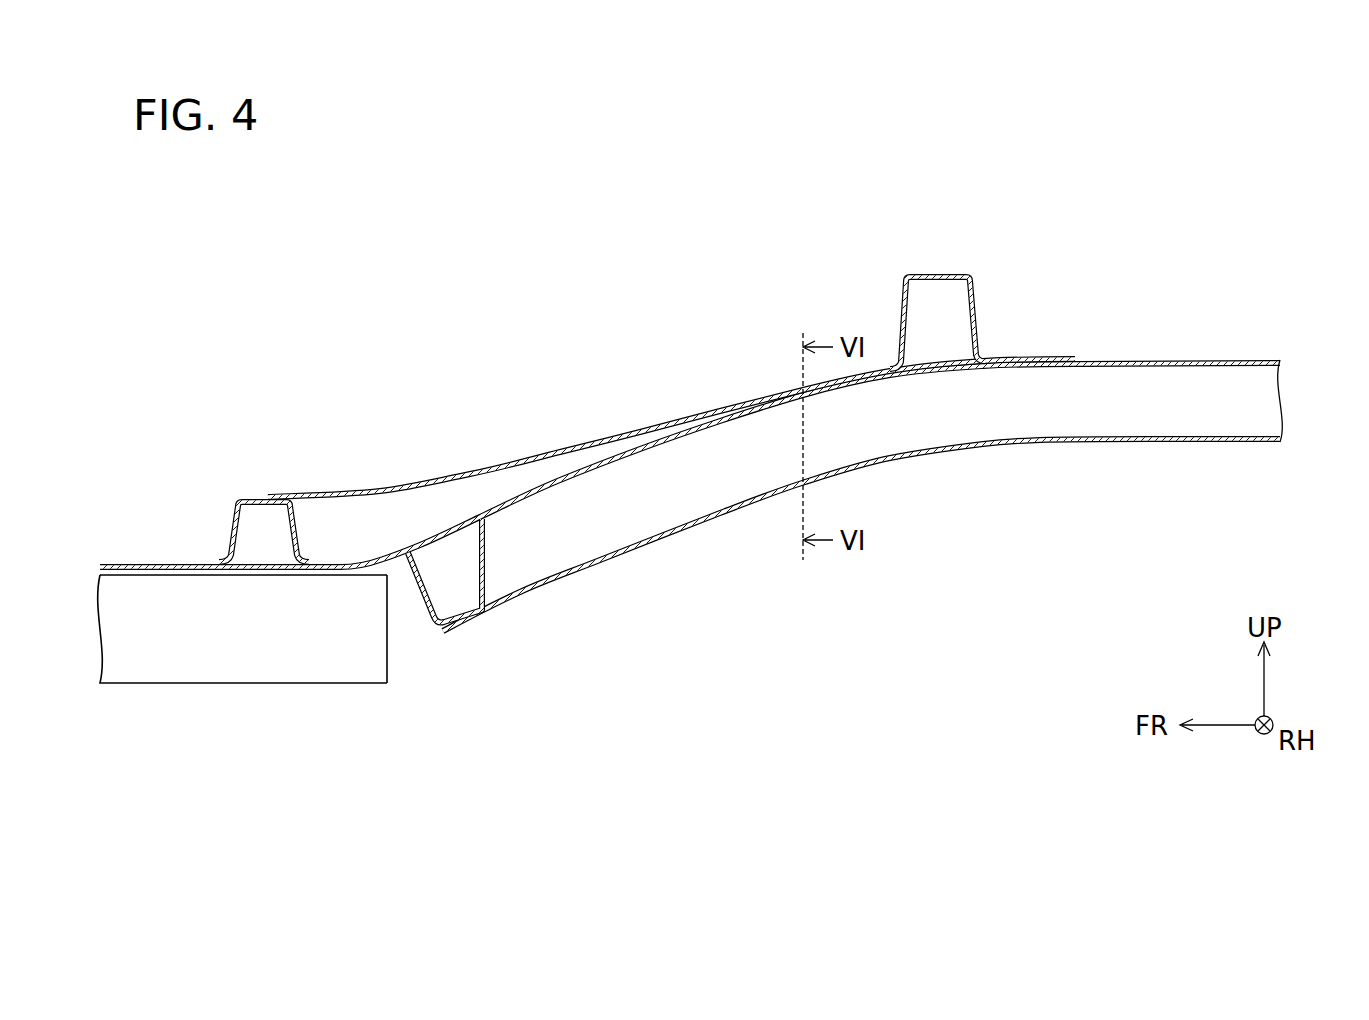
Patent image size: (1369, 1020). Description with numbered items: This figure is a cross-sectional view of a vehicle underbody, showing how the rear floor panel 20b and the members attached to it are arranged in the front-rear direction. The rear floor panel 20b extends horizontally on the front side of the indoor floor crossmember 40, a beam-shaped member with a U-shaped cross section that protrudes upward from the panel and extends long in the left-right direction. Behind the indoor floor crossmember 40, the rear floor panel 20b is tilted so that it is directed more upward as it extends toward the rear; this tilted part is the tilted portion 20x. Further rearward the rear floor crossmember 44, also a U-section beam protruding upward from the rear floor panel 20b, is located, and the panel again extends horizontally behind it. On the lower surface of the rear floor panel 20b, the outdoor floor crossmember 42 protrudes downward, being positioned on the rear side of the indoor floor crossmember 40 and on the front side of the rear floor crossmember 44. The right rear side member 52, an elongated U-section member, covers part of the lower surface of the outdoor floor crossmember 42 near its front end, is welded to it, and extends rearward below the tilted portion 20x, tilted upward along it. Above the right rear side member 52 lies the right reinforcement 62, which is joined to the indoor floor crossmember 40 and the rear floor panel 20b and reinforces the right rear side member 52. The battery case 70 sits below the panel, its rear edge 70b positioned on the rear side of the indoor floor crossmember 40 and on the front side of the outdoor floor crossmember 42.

The rear floor panel 20b is at (147, 562).
The tilted portion 20x is at (699, 431).
The indoor floor crossmember 40 is at (258, 498).
The outdoor floor crossmember 42 is at (423, 606).
The rear floor crossmember 44 is at (937, 273).
The right rear side member 52 is at (592, 567).
The right reinforcement 62 is at (468, 472).
The battery case 70 is at (277, 668).
The rear edge 70b is at (387, 662).